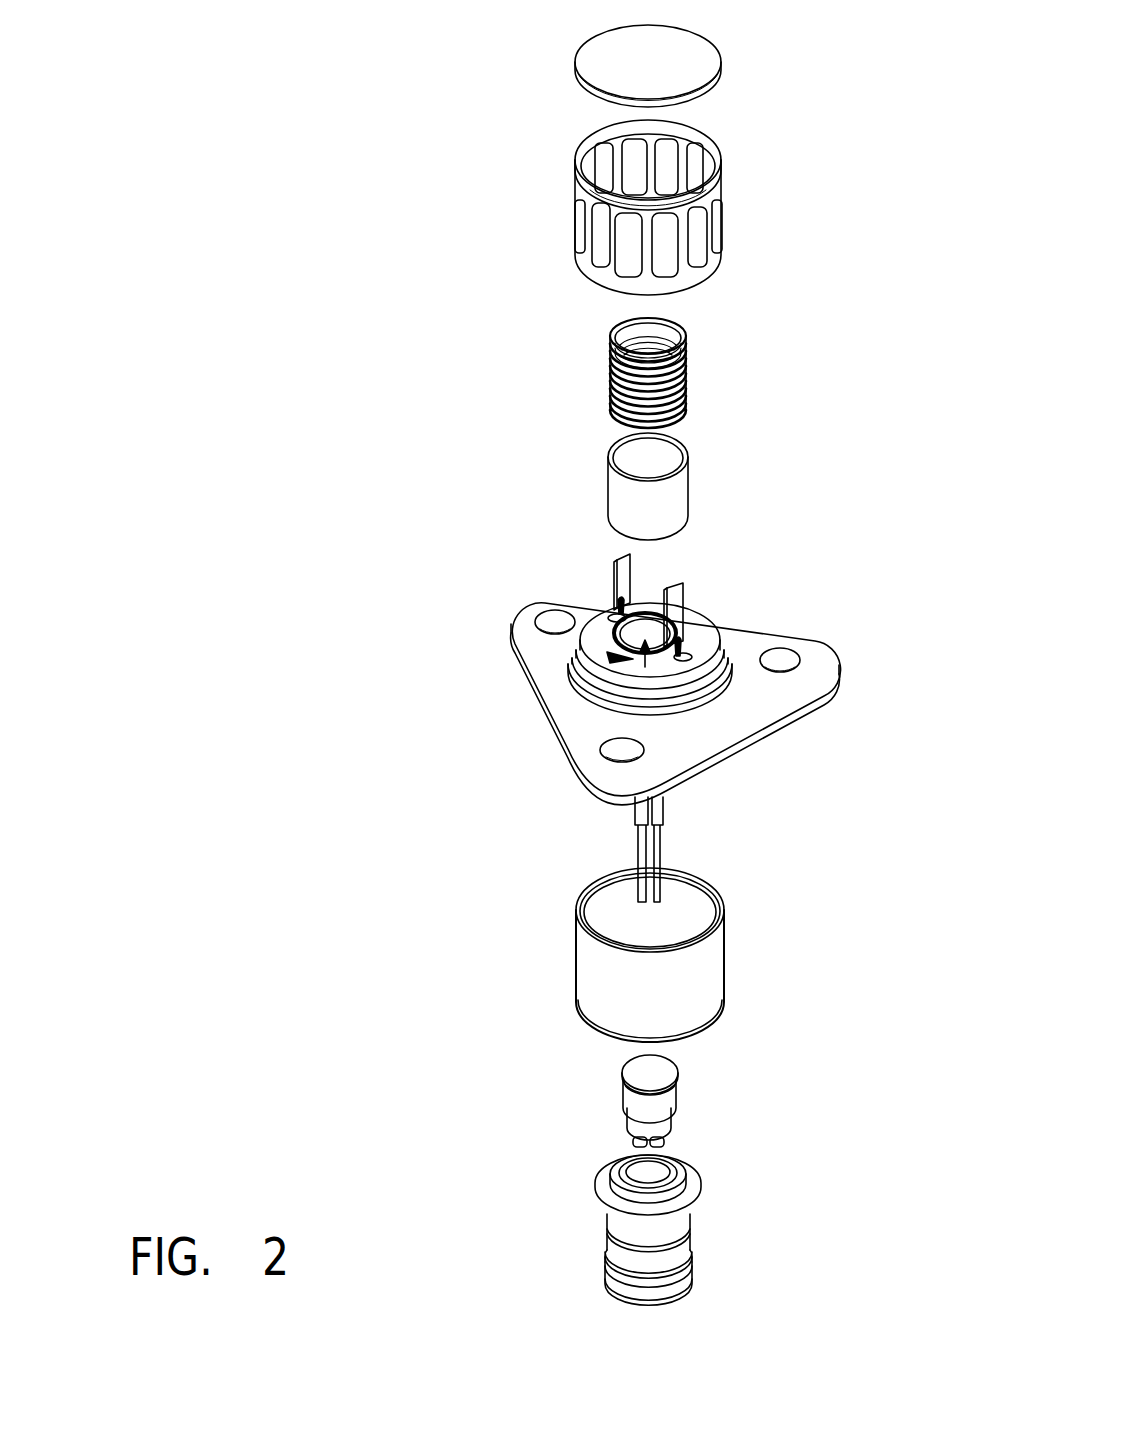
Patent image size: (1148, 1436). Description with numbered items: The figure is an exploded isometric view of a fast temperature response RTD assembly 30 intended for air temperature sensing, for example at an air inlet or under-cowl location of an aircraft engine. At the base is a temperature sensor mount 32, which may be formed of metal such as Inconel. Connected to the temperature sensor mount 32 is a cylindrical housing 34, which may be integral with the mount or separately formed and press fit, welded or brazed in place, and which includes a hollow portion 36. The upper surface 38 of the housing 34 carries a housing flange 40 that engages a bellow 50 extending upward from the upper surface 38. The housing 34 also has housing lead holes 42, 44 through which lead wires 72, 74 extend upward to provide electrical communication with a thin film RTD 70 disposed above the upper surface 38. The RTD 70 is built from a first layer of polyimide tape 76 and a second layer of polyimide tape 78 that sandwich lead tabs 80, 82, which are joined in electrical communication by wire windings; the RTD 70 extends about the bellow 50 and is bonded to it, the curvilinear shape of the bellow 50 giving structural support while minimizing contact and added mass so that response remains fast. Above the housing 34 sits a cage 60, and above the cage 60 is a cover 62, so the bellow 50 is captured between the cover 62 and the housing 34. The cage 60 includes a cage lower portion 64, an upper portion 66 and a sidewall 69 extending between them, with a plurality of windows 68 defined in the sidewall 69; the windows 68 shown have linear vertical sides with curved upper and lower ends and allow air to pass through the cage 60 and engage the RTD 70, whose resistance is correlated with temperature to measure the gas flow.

The fast temperature response RTD assembly 30 is at (257, 130).
The temperature sensor mount 32 is at (818, 660).
The housing 34 is at (578, 670).
The hollow portion 36 is at (605, 716).
The upper surface 38 is at (692, 648).
The housing flange 40 is at (660, 650).
The housing lead hole 42 is at (723, 662).
The housing lead hole 44 is at (600, 658).
The bellow 50 is at (610, 360).
The cage 60 is at (541, 190).
The cover 62 is at (692, 68).
The cage lower portion 64 is at (710, 267).
The cage upper portion 66 is at (713, 197).
The windows 68 is at (738, 228).
The sidewall 69 is at (578, 262).
The thin film RTD 70 is at (587, 437).
The lead wire 72 is at (688, 636).
The lead wire 74 is at (637, 608).
The first layer of polyimide tape 76 is at (690, 495).
The second layer of polyimide tape 78 is at (658, 456).
The lead tab 80 is at (614, 578).
The lead tab 82 is at (696, 632).